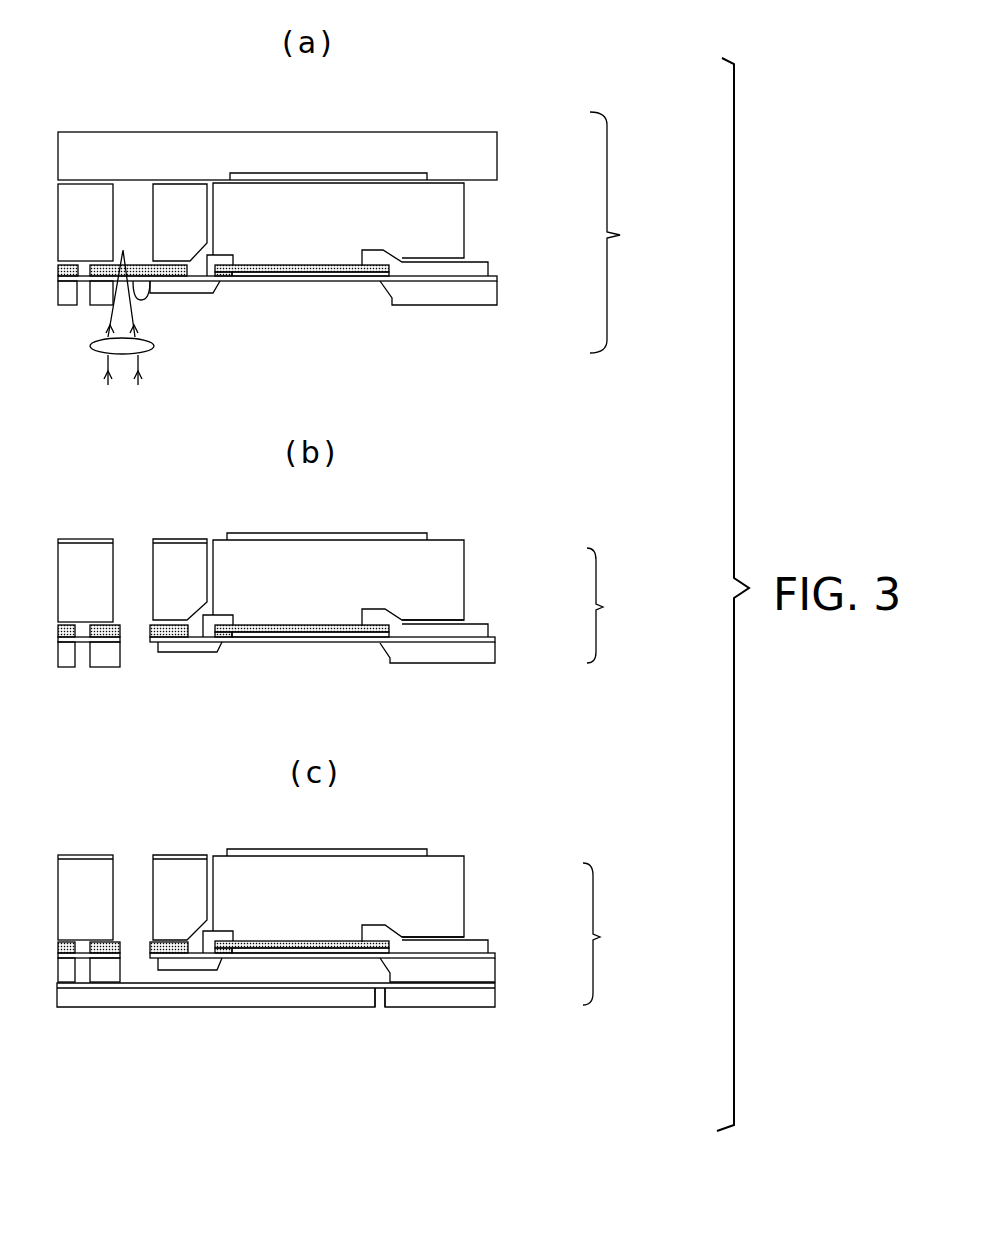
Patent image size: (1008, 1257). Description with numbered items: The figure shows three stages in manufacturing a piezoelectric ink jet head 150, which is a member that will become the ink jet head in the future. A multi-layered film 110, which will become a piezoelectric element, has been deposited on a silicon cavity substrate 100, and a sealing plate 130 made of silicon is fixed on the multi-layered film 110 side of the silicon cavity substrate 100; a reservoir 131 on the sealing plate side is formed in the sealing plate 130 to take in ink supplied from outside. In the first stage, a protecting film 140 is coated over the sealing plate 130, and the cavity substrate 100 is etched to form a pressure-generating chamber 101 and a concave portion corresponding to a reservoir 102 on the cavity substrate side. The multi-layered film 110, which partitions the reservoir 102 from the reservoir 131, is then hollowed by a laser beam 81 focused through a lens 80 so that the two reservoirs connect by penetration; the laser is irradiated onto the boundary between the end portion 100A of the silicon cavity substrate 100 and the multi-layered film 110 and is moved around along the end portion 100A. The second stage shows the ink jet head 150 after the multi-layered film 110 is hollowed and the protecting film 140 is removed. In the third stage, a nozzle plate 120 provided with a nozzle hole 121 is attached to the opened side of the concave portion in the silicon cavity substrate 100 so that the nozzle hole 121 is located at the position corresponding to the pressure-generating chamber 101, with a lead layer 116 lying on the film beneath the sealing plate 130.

The lens 80 is at (90, 343).
The laser beam 81 is at (107, 363).
The silicon cavity substrate 100 is at (203, 288).
The end portion of the silicon cavity substrate 100A is at (150, 285).
The pressure-generating chamber 101 is at (330, 281).
The reservoir on cavity substrate side 102 is at (136, 262).
The multi-layered film 110 is at (272, 270).
The lead electrode 116 is at (477, 265).
The nozzle plate 120 is at (447, 1000).
The nozzle hole 121 is at (380, 1005).
The sealing plate 130 is at (463, 217).
The reservoir on sealing plate side 131 is at (122, 250).
The protecting film 140 is at (417, 132).
The ink jet head 150 is at (627, 558).